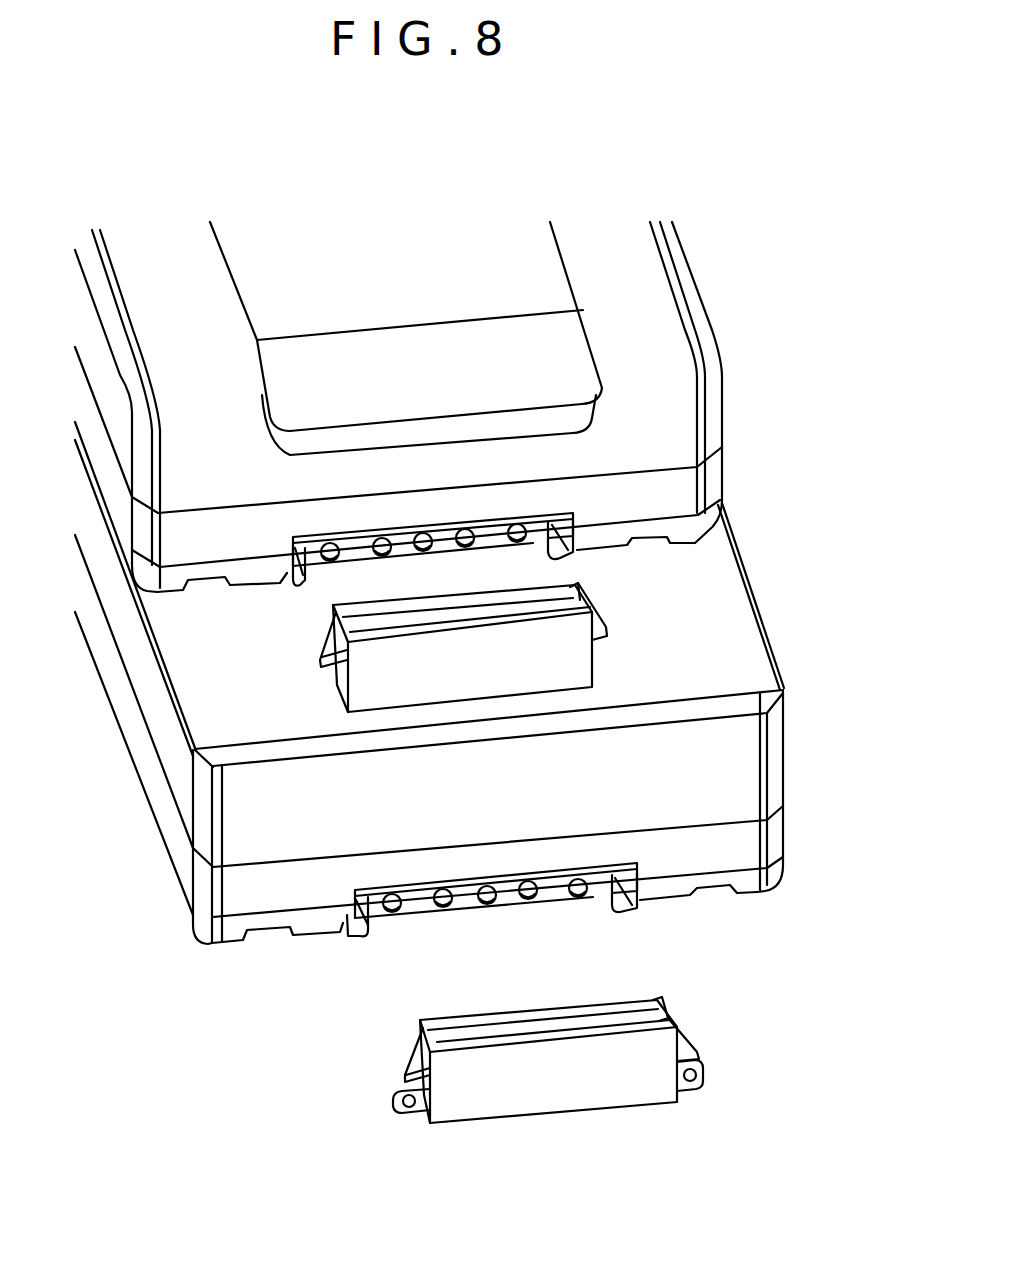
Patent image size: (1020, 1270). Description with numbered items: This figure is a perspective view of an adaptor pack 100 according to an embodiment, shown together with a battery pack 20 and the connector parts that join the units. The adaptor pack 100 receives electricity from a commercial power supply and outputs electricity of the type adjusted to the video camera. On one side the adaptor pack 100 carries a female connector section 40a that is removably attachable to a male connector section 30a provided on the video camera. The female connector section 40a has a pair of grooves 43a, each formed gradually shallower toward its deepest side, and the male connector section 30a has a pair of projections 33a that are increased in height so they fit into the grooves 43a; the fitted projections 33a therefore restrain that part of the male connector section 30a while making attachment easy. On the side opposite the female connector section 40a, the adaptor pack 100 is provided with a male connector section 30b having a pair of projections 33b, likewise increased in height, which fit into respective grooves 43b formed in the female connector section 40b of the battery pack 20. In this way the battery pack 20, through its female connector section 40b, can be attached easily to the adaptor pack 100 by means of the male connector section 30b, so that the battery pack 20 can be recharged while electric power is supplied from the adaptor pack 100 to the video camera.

The battery pack 20 is at (415, 208).
The adaptor pack 100 is at (283, 992).
The male connector section 30a is at (570, 1098).
The male connector section 30b is at (473, 663).
The projection 33a is at (423, 1060).
The projection 33b is at (327, 640).
The female connector section 40a is at (508, 898).
The female connector section 40b is at (447, 542).
The groove 43a is at (367, 905).
The groove 43b is at (300, 565).